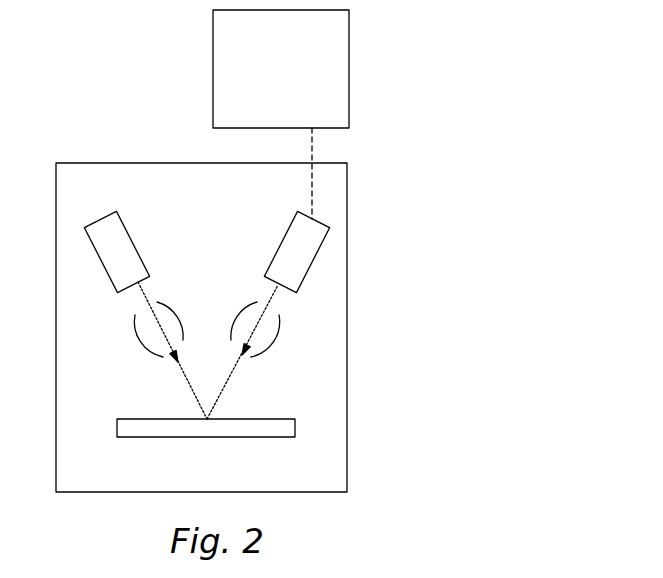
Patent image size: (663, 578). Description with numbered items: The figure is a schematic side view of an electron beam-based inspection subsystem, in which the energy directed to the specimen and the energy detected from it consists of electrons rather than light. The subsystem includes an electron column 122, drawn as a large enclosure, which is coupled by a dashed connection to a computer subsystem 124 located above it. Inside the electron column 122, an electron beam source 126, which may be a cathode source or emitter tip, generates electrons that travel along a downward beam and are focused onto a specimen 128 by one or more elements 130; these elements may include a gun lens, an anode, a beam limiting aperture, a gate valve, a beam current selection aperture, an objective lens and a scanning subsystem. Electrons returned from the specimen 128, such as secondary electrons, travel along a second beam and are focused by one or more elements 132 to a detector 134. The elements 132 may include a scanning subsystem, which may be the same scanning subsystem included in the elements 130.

The electron column 122 is at (201, 314).
The computer subsystem 124 is at (302, 109).
The electron beam source 126 is at (122, 223).
The specimen 128 is at (252, 418).
The elements 130 is at (144, 350).
The elements 132 is at (272, 352).
The detector 134 is at (295, 225).